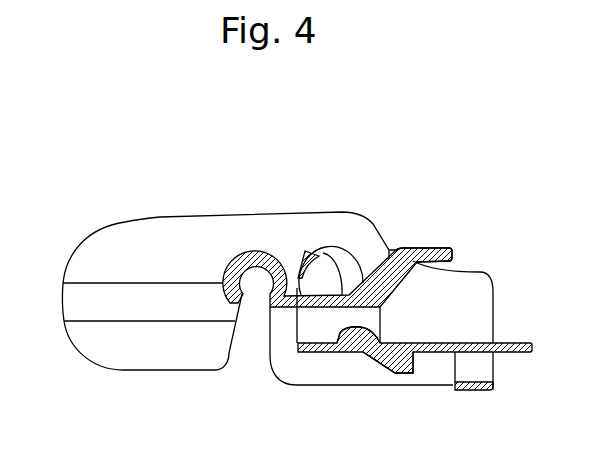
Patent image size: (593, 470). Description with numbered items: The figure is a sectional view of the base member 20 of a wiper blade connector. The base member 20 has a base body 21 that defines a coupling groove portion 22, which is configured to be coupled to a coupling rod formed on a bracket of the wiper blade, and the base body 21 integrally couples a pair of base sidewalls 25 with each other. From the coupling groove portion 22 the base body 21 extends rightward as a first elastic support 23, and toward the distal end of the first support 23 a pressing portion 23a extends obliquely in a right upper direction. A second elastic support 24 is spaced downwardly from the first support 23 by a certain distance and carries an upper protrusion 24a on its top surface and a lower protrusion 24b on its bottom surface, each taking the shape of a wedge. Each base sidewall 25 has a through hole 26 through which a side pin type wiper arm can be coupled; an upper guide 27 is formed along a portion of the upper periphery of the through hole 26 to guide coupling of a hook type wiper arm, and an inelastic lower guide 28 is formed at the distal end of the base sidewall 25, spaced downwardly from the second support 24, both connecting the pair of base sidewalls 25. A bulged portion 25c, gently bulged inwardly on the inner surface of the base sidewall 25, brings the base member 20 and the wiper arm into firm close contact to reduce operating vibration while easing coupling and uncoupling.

The base member 20 is at (146, 197).
The base body 21 is at (258, 250).
The coupling groove portion 22 is at (256, 293).
The first elastic support 23 is at (334, 253).
The pressing portion 23a is at (432, 247).
The second elastic support 24 is at (527, 343).
The upper protrusion 24a is at (339, 334).
The lower protrusion 24b is at (413, 365).
The base sidewall 25 is at (82, 259).
The bulged portion 25c is at (71, 302).
The through hole 26 is at (315, 338).
The upper guide 27 is at (306, 251).
The lower guide 28 is at (483, 390).